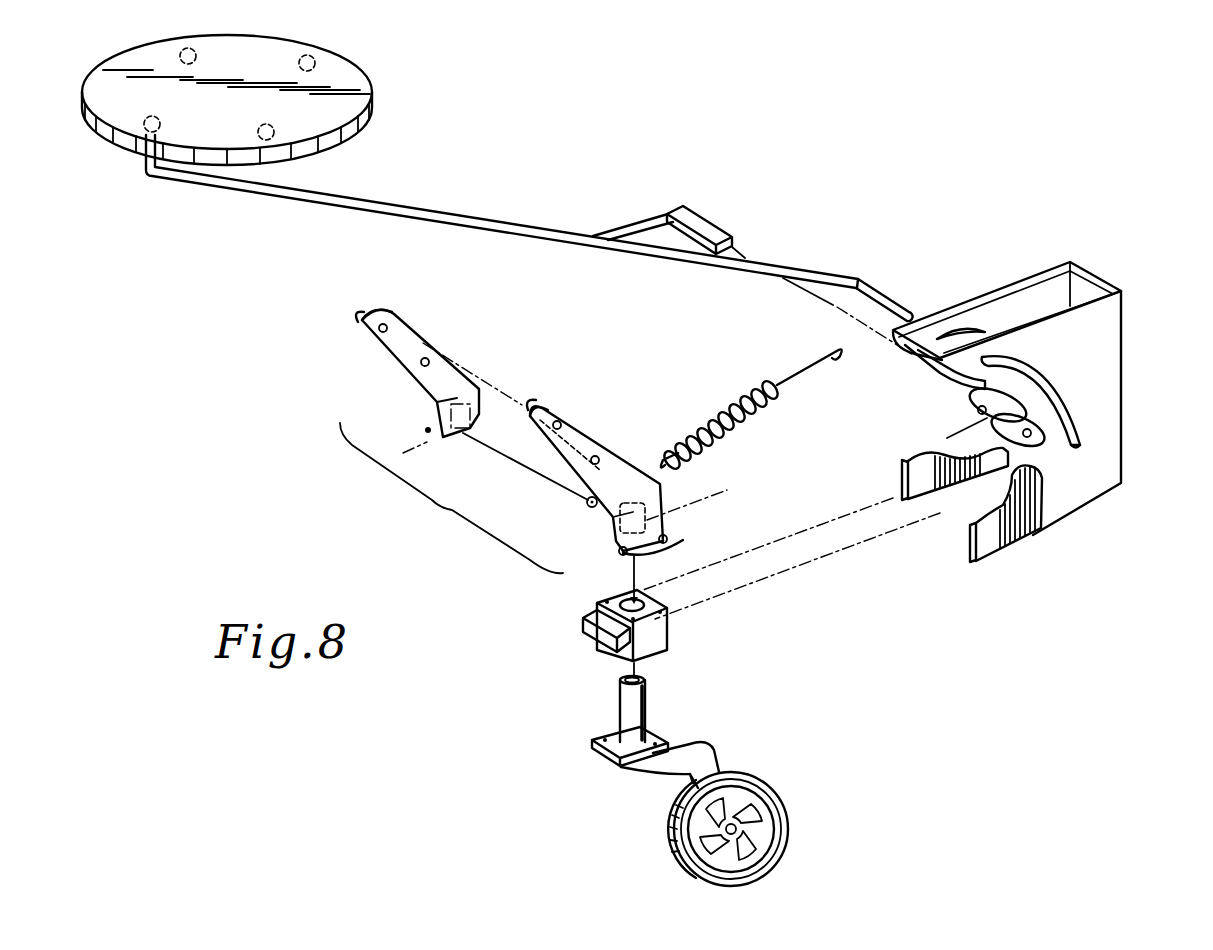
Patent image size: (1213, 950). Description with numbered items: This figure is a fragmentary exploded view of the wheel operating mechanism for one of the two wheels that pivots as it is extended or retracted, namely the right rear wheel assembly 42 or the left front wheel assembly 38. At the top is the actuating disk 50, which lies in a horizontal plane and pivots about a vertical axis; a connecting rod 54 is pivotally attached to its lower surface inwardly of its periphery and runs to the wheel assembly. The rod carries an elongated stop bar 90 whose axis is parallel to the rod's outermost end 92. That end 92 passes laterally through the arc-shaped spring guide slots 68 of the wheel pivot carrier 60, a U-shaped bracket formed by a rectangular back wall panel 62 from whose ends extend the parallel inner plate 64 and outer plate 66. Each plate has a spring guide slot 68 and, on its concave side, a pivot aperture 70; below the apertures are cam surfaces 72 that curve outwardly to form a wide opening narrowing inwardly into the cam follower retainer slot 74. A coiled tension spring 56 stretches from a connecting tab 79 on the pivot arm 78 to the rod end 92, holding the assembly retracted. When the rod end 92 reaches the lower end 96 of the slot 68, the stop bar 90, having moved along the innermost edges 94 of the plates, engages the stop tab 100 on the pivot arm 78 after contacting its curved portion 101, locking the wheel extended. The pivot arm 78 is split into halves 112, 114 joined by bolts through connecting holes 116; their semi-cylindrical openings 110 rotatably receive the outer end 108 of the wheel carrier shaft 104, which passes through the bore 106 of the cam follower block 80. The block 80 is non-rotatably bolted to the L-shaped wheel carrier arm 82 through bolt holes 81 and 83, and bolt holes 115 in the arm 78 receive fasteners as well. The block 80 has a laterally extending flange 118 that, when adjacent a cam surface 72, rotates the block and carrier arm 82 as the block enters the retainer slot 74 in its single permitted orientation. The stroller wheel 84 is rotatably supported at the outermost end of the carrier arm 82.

The actuating disk 50 is at (373, 92).
The connecting rod 54 is at (380, 200).
The stop bar 90 is at (698, 223).
The outermost end of connecting rod 92 is at (880, 292).
The wheel pivot carrier 60 is at (1045, 382).
The back wall panel 62 is at (1031, 382).
The inner plate 64 is at (1035, 287).
The outer plate 66 is at (1108, 340).
The spring guide slot 68 is at (967, 327).
The pivot aperture 70 is at (978, 410).
The cam surface 72 is at (932, 490).
The cam follower retainer slot 74 is at (1037, 510).
The innermost edge of inner and outer plates 94 is at (913, 365).
The lower end of spring guide slot 96 is at (1082, 444).
The coiled tension spring 56 is at (753, 393).
The pivot arm 78 is at (440, 510).
The connecting tab 79 is at (587, 503).
The stop tab 100 is at (368, 308).
The curved portion 101 is at (358, 314).
The connecting holes 116 is at (421, 360).
The pivot arm half 112 is at (427, 340).
The pivot arm half 114 is at (600, 440).
The bolt holes in pivot arm 115 is at (426, 428).
The semi-cylindrical opening 110 is at (453, 432).
The bore 106 is at (657, 592).
The bolt holes in follower block 81 is at (597, 598).
The cam follower block 80 is at (630, 609).
The flange 118 is at (587, 637).
The outer end of wheel carrier shaft 108 is at (640, 678).
The wheel carrier shaft 104 is at (665, 700).
The bolt holes in carrier arm 83 is at (607, 736).
The wheel carrier arm 82 is at (707, 743).
The stroller wheel 84 is at (750, 773).
The right rear wheel assembly 42 is at (625, 793).
The left front wheel assembly 38 is at (625, 793).